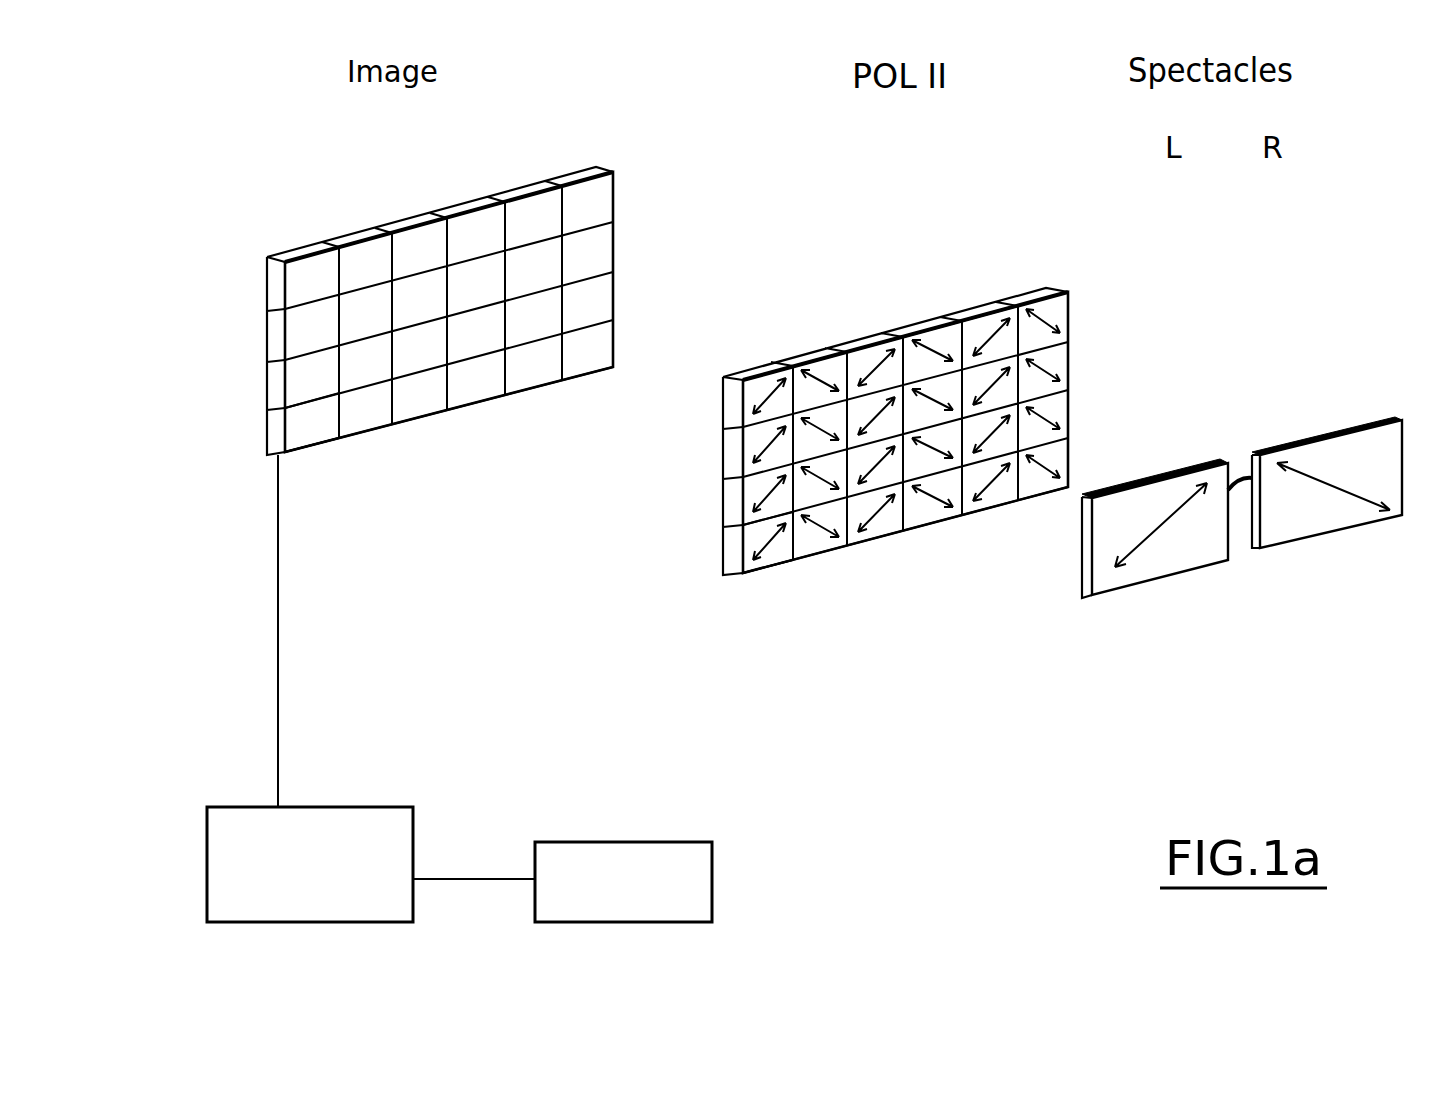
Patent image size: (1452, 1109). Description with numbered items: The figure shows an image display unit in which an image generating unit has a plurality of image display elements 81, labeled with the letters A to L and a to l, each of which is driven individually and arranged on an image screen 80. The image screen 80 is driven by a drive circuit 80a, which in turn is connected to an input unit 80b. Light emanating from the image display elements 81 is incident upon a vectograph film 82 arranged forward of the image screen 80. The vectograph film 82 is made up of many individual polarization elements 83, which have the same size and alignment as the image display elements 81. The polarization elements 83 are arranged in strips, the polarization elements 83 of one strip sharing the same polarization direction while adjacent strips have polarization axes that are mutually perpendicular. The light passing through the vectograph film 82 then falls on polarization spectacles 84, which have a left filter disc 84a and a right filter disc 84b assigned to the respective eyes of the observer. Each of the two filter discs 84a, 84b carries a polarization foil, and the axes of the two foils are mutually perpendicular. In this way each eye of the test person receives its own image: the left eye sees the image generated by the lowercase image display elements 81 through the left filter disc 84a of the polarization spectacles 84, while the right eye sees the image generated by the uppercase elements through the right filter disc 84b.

The image screen 80 is at (428, 436).
The image display element 81 is at (310, 440).
The drive circuit 80a is at (334, 815).
The input unit 80b is at (617, 863).
The vectograph film 82 is at (903, 547).
The polarization element 83 is at (773, 560).
The polarization spectacles 84 is at (1242, 569).
The left filter disc 84a is at (1172, 560).
The right filter disc 84b is at (1305, 522).